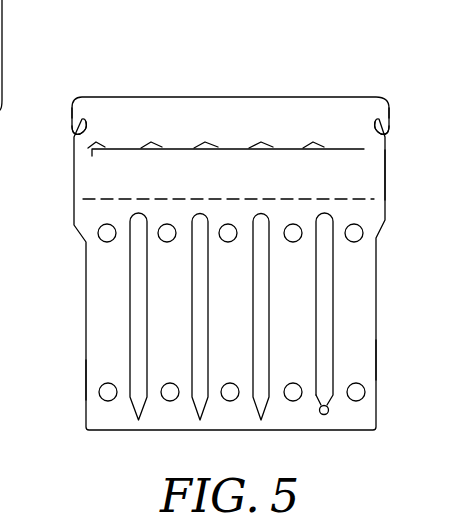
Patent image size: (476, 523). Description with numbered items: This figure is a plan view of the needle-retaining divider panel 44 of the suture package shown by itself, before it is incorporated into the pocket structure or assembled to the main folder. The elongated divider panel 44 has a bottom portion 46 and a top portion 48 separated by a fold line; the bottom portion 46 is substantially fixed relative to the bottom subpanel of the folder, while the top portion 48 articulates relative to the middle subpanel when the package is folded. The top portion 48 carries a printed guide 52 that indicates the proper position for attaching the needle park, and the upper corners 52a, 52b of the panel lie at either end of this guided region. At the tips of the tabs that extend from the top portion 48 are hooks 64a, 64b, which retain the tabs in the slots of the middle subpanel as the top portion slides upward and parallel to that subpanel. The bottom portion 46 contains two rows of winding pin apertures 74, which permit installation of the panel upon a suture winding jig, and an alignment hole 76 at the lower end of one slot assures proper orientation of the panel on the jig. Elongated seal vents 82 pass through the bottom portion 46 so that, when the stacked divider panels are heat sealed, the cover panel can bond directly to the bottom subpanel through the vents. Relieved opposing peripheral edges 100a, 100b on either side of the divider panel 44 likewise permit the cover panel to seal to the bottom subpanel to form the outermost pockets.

The divider panel 44 is at (239, 243).
The bottom portion 46 is at (104, 312).
The top portion 48 is at (368, 174).
The printed guide 52 is at (232, 149).
The first flange end 52a is at (75, 90).
The second flange end 52b is at (390, 91).
The hook 64a is at (75, 127).
The hook 64b is at (383, 125).
The winding pin apertures 74 is at (298, 237).
The alignment hole 76 is at (324, 414).
The seal vents 82 is at (269, 313).
The relieved peripheral edge 100a is at (87, 387).
The relieved peripheral edge 100b is at (377, 358).